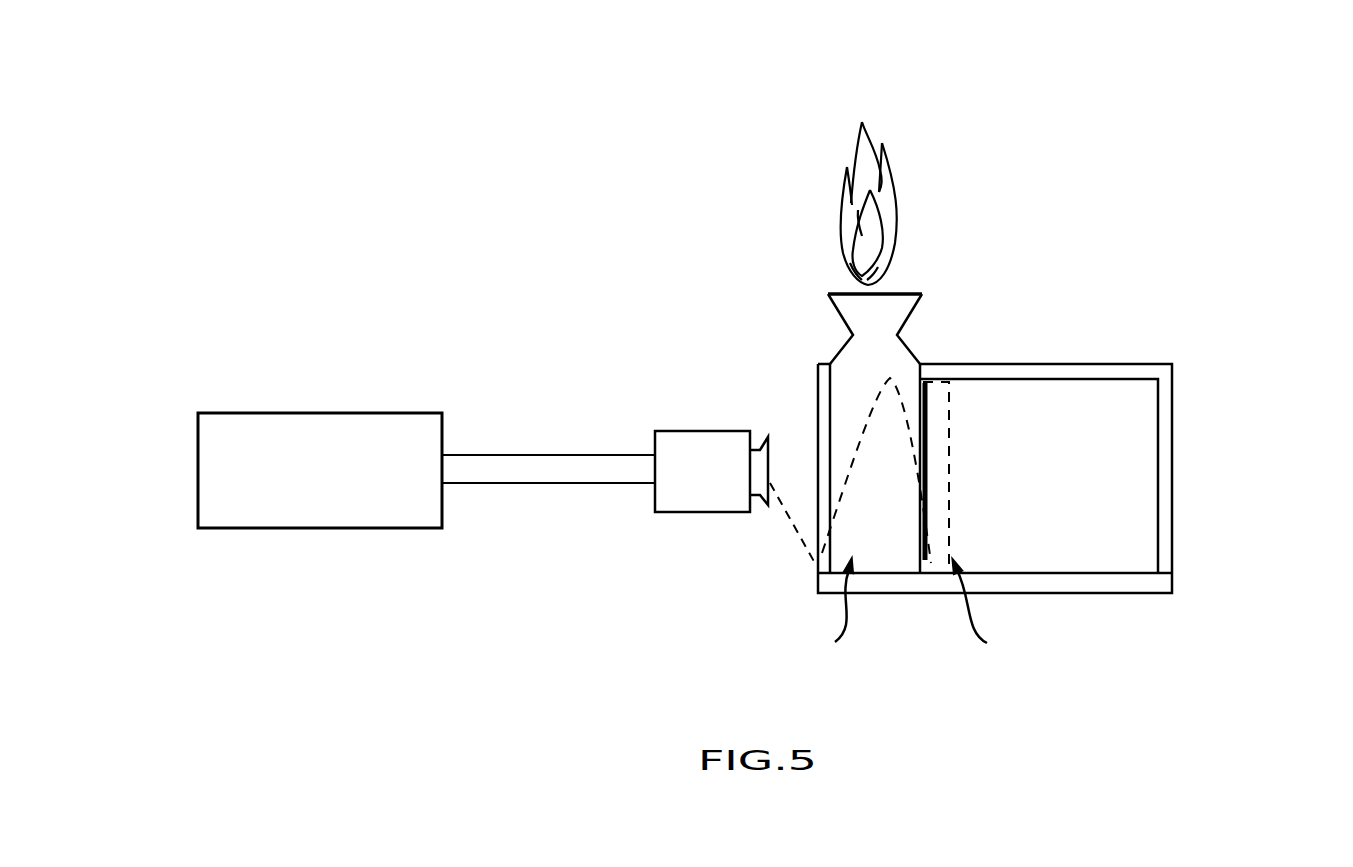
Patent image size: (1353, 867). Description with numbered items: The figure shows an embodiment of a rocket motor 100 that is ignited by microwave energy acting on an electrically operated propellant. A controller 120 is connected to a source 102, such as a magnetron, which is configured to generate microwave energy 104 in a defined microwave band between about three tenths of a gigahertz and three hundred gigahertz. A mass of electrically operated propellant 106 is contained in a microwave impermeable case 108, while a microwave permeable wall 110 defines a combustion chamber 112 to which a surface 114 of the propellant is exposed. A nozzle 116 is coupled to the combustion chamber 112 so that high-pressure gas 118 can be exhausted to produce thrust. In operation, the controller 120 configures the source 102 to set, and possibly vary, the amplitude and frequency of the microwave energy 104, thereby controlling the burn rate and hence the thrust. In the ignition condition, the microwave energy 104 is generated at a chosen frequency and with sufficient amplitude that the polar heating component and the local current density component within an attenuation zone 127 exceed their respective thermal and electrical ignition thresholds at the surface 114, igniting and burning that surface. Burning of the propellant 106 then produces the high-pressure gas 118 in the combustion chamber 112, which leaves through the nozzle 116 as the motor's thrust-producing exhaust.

The rocket motor 100 is at (750, 137).
The source 102 is at (667, 513).
The microwave energy 104 is at (793, 543).
The electrically operated propellant 106 is at (1073, 540).
The microwave impermeable case 108 is at (1172, 472).
The microwave permeable wall 110 is at (803, 405).
The combustion chamber 112 is at (834, 615).
The surface 114 is at (923, 473).
The nozzle 116 is at (828, 302).
The high-pressure gas 118 is at (898, 212).
The controller 120 is at (418, 413).
The attenuation zone 127 is at (979, 616).